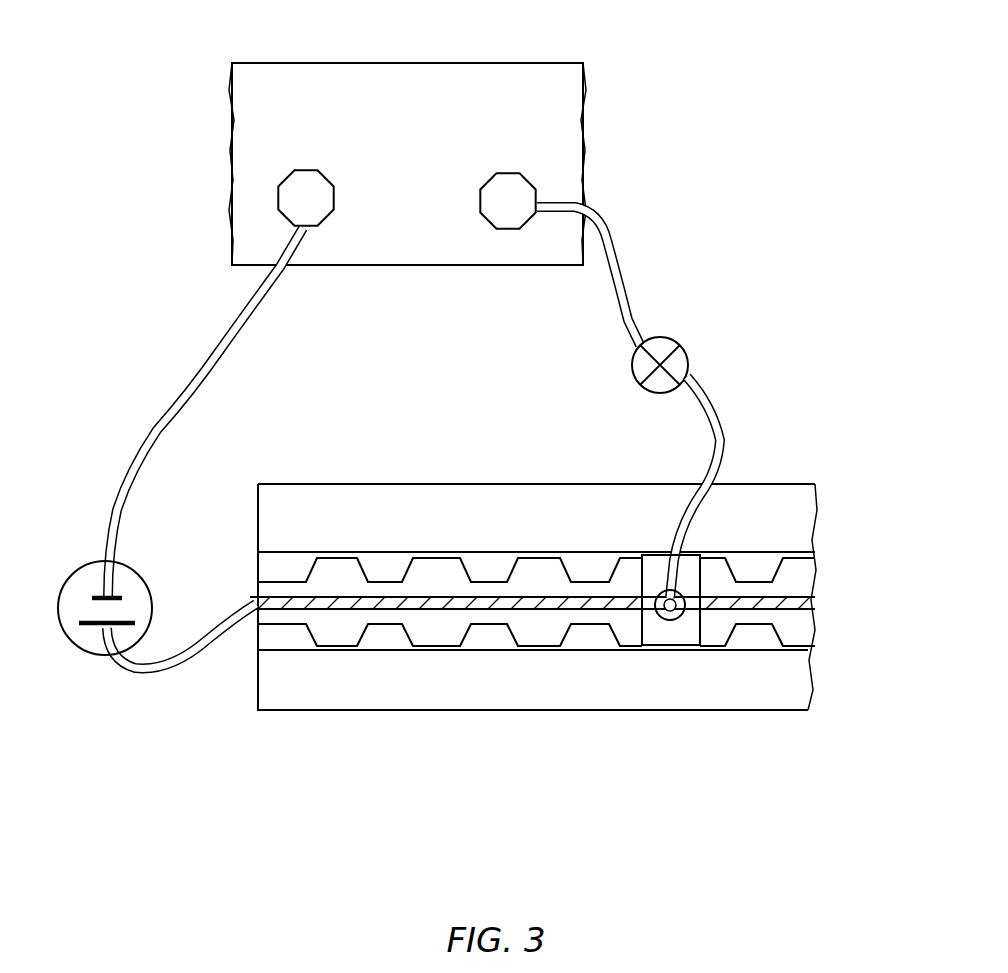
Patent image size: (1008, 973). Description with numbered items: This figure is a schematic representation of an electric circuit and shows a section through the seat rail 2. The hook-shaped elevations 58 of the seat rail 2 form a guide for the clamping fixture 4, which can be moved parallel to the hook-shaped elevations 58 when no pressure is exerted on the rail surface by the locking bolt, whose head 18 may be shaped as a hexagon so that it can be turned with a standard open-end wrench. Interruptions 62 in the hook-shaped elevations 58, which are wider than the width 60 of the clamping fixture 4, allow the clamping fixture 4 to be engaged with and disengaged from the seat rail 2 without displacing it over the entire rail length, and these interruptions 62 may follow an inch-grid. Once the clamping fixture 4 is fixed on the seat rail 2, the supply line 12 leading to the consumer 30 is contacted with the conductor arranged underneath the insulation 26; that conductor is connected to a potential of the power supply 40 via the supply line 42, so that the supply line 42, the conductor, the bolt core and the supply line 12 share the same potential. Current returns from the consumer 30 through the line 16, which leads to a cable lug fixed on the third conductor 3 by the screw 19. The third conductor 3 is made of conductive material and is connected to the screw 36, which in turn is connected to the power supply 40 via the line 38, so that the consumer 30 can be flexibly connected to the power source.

The third conductor 3 is at (557, 142).
The screw 36 is at (302, 173).
The screw 19 is at (507, 172).
The line 16 is at (617, 247).
The consumer 30 is at (676, 338).
The supply line 12 is at (724, 428).
The head 18 is at (685, 597).
The hook-shaped elevations 58 is at (808, 557).
The insulation 26 is at (818, 602).
The seat rail 2 is at (797, 690).
The interruptions 62 is at (808, 645).
The clamping fixture 4 is at (653, 648).
The width 60 is at (682, 633).
The supply line 42 is at (183, 667).
The power supply 40 is at (78, 565).
The line 38 is at (195, 375).